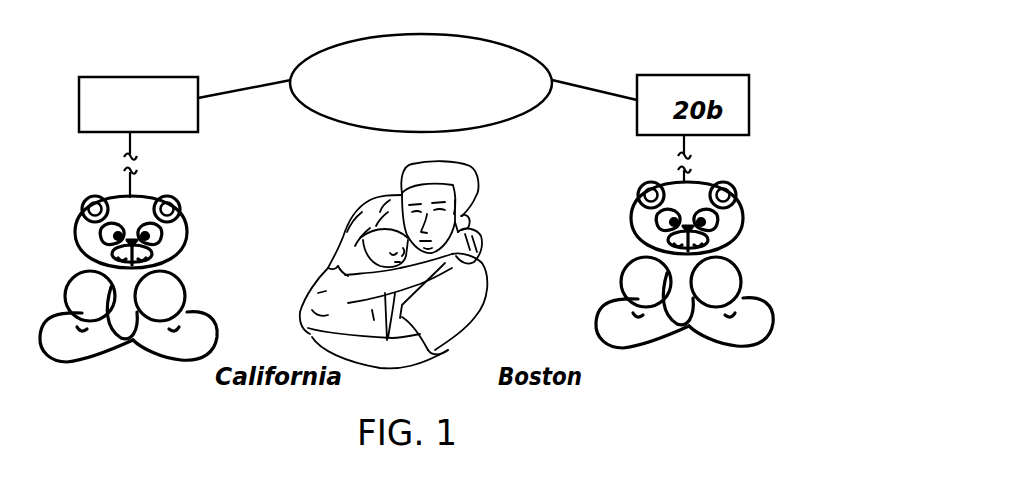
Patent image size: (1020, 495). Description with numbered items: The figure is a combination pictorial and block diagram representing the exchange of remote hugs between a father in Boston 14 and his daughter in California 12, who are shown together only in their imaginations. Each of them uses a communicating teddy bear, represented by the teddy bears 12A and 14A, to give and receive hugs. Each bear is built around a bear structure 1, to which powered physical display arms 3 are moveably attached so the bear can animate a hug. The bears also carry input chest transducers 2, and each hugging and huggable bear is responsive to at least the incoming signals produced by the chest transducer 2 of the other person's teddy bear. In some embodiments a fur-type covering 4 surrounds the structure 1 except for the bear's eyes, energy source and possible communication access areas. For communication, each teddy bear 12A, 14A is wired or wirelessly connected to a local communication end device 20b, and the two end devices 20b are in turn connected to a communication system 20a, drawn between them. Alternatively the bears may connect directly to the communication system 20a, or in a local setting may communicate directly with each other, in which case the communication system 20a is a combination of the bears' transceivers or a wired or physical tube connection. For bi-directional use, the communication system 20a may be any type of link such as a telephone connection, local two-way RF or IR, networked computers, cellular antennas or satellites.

The bear structure 1 is at (112, 232).
The chest transducer 2 is at (172, 310).
The powered physical display arm 3 is at (75, 296).
The fur-type covering 4 is at (696, 332).
The daughter in California 12 is at (355, 218).
The teddy bear 12A is at (137, 297).
The father in Boston 14 is at (405, 172).
The teddy bear 14A is at (693, 286).
The communication system 20a is at (498, 122).
The local communication end device 20b is at (185, 137).